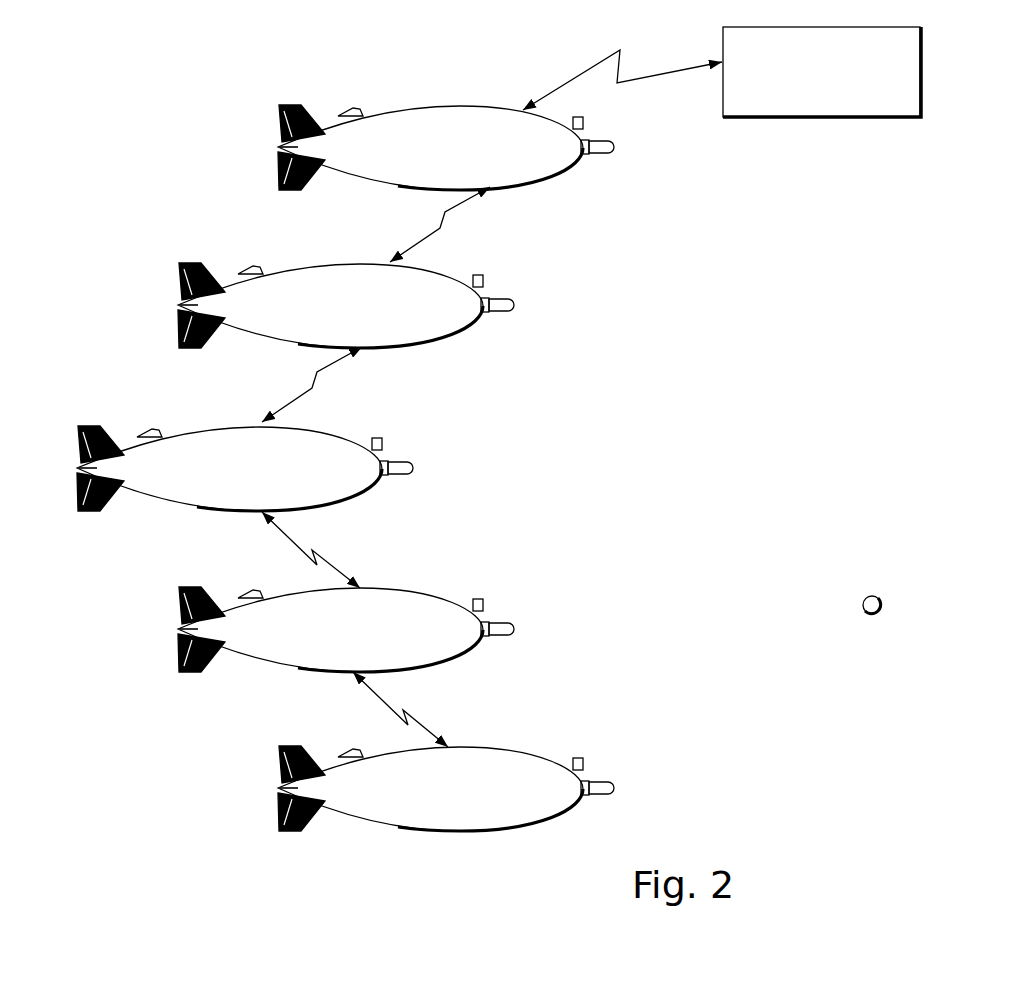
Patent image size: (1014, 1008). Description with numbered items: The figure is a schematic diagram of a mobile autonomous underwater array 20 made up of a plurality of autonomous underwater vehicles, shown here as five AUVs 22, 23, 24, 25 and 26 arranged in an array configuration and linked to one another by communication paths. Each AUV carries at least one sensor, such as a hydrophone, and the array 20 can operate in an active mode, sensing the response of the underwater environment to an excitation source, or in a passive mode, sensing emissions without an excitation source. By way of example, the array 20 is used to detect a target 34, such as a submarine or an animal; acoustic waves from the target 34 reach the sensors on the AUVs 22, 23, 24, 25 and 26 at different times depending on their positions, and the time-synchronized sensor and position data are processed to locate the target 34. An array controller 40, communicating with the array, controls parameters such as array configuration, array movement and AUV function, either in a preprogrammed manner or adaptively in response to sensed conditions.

The array 20 is at (201, 214).
The AUV 22 is at (556, 180).
The AUV 23 is at (455, 340).
The AUV 24 is at (372, 445).
The AUV 25 is at (428, 592).
The AUV 26 is at (528, 755).
The target 34 is at (880, 600).
The array controller 40 is at (923, 85).